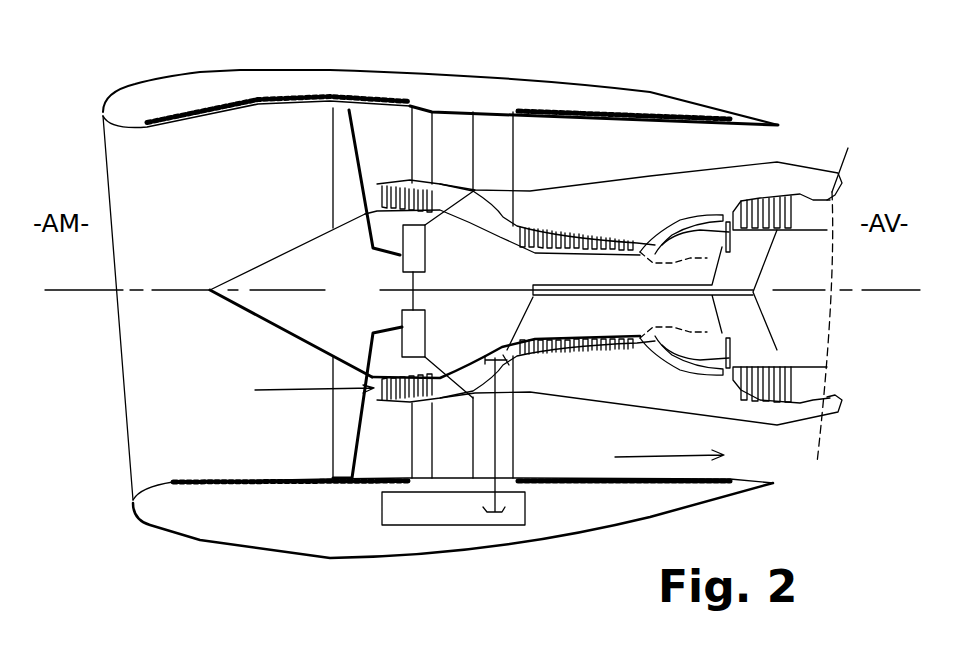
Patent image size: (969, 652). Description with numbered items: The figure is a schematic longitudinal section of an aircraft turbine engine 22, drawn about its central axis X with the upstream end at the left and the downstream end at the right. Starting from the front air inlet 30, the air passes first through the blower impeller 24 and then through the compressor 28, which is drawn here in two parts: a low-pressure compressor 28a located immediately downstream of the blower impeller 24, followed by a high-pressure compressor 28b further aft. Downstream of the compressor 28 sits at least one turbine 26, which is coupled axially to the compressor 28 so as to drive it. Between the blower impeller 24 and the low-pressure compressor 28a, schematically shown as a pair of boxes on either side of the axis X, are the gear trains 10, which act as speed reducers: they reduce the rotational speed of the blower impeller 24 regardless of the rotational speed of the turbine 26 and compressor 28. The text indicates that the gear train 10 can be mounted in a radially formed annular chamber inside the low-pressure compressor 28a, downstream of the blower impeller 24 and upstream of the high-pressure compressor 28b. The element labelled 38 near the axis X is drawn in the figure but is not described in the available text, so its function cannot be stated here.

The aircraft turbine engine 22 is at (646, 72).
The blower impeller 24 is at (335, 140).
The turbine 26 is at (783, 195).
The compressor 28 is at (586, 220).
The low-pressure compressor 28a is at (398, 173).
The high-pressure compressor 28b is at (600, 235).
The gear train 10 is at (402, 317).
The front air inlet 30 is at (87, 308).
The combustion chamber 38 is at (448, 290).
The longitudinal axis X is at (880, 292).